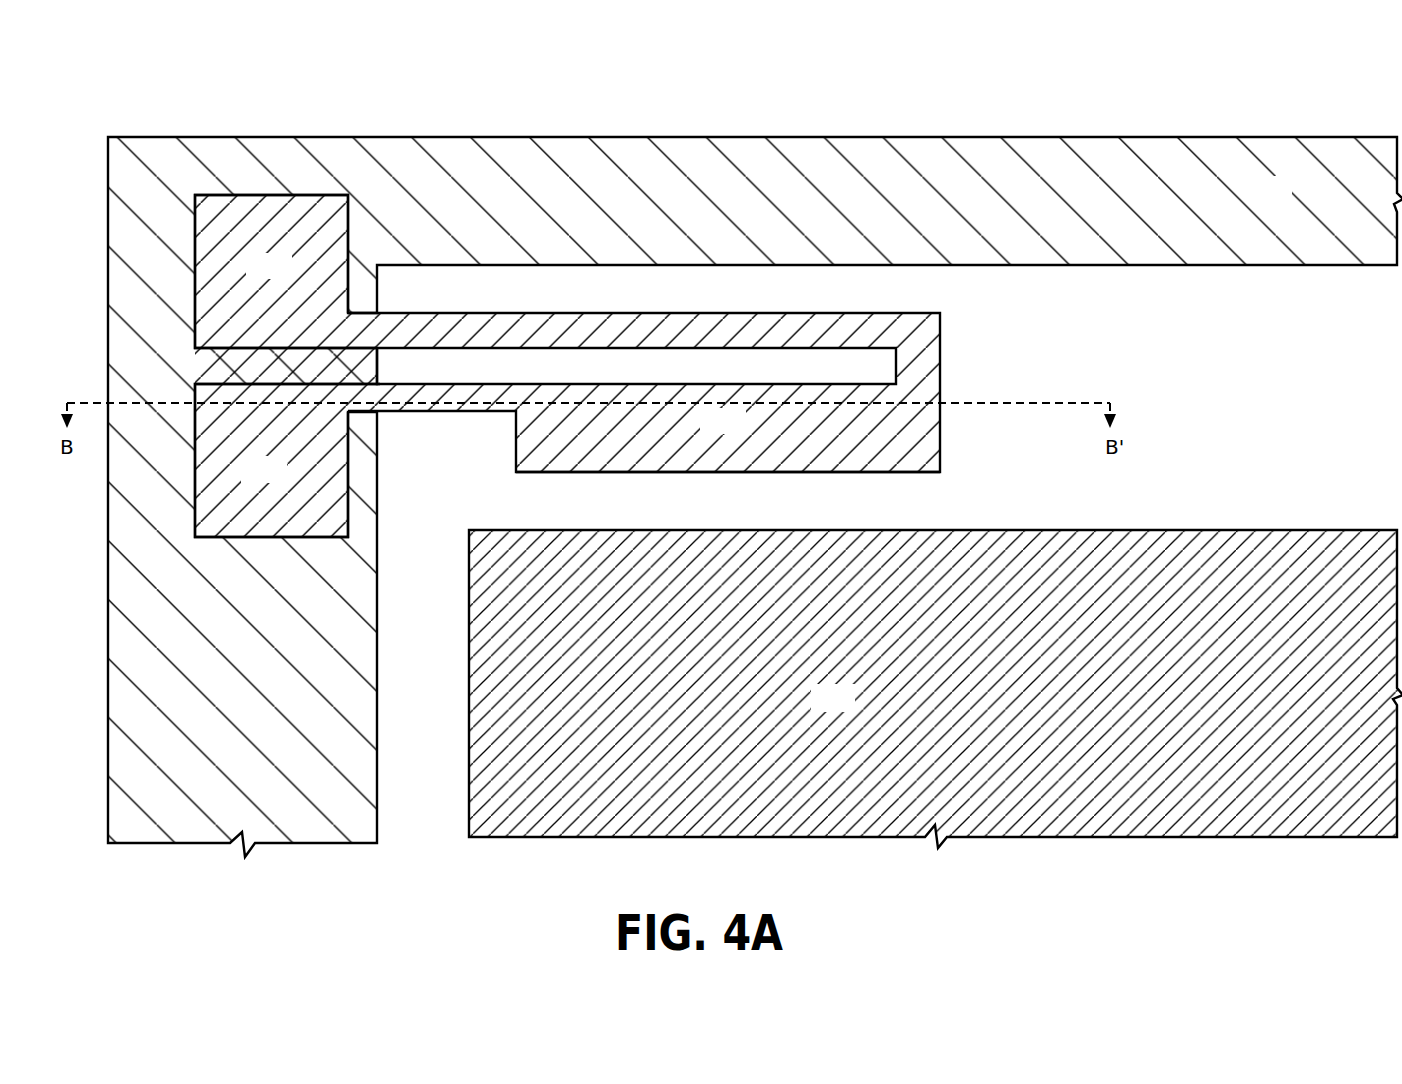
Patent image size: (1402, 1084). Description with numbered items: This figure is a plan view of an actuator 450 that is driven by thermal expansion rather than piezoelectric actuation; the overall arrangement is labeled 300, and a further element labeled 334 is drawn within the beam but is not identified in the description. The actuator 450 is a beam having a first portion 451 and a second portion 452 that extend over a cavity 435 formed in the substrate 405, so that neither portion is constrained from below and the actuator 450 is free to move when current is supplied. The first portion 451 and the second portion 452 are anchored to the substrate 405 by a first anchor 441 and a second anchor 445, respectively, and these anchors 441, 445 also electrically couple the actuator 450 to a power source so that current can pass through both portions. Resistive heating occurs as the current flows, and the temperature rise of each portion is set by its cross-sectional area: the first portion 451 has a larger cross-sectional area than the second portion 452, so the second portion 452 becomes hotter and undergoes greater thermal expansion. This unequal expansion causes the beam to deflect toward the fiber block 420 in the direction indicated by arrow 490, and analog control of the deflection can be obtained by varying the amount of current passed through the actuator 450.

The semiconductor device 300 is at (221, 98).
The substrate 405 is at (1288, 200).
The cavity 435 is at (1113, 310).
The second anchor 445 is at (288, 277).
The first anchor 441 is at (283, 481).
The second portion 452 is at (593, 327).
The bottom electrode plate 334 is at (743, 432).
The actuator 450 is at (966, 332).
The first portion 451 is at (680, 450).
The arrow 490 is at (945, 474).
The fiber block 420 is at (853, 709).